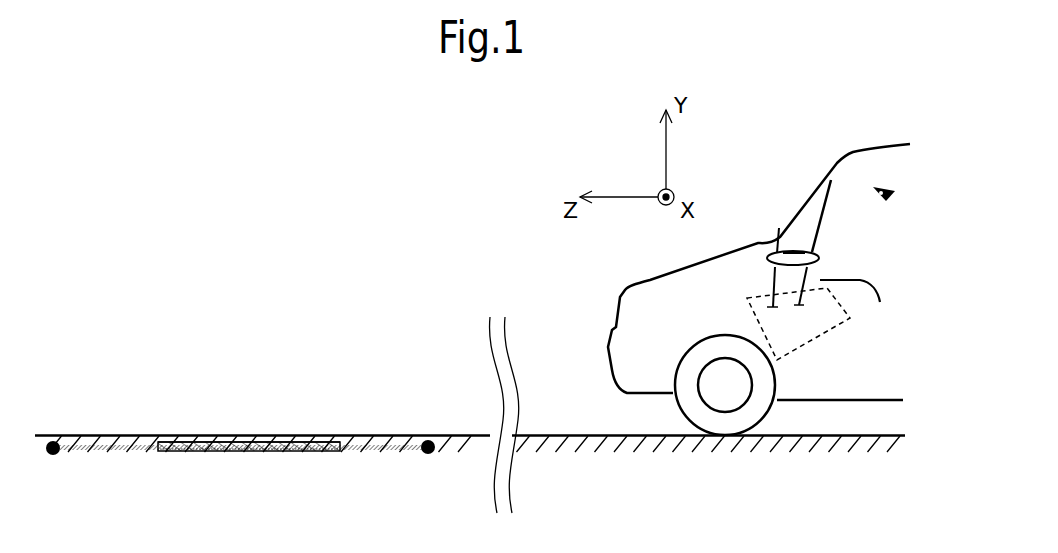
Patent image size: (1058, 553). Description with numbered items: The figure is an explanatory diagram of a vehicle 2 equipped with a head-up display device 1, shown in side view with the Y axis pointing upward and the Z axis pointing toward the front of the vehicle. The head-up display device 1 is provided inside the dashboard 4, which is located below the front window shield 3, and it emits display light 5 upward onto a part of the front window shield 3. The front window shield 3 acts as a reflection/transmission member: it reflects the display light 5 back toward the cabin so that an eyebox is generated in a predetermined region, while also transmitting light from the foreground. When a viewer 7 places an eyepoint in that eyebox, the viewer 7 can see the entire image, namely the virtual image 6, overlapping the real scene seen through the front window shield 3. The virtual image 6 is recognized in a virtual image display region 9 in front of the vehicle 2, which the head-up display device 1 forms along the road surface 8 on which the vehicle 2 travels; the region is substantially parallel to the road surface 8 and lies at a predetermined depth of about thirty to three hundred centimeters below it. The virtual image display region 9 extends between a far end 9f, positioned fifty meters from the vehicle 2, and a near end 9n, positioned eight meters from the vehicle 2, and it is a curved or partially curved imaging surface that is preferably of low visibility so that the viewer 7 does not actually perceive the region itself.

The head-up display device 1 is at (852, 320).
The vehicle 2 is at (607, 342).
The front window shield 3 is at (818, 182).
The dashboard 4 is at (858, 280).
The display light 5 is at (815, 258).
The virtual image 6 is at (200, 442).
The viewer 7 is at (892, 192).
The road surface 8 is at (312, 435).
The virtual image display region 9 is at (110, 450).
The far end 9f is at (55, 441).
The near end 9n is at (427, 440).